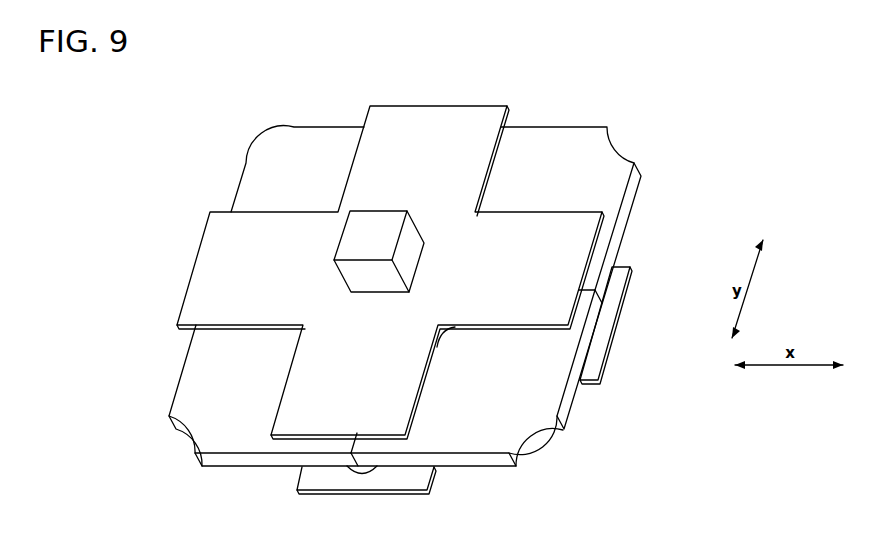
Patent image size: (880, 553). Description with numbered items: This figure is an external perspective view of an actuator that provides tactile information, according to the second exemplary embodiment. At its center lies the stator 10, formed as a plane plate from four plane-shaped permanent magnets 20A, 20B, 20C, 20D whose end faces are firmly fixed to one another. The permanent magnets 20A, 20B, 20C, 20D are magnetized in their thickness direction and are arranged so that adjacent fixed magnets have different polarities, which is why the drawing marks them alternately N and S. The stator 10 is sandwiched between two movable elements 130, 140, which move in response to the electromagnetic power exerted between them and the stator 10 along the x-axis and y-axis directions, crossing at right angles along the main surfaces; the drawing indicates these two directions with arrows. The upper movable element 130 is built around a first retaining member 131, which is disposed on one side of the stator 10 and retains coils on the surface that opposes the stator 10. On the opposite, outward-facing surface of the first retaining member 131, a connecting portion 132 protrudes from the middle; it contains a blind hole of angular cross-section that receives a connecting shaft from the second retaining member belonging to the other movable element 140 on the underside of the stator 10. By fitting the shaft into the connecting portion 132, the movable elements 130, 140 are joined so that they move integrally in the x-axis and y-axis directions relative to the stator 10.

The stator 10 is at (586, 124).
The permanent magnet 20A is at (618, 188).
The permanent magnet 20B is at (497, 447).
The permanent magnet 20C is at (170, 405).
The permanent magnet 20D is at (248, 180).
The movable element 130 is at (390, 239).
The first retaining member 131 is at (428, 110).
The connecting portion 132 is at (388, 217).
The movable element 140 is at (640, 266).